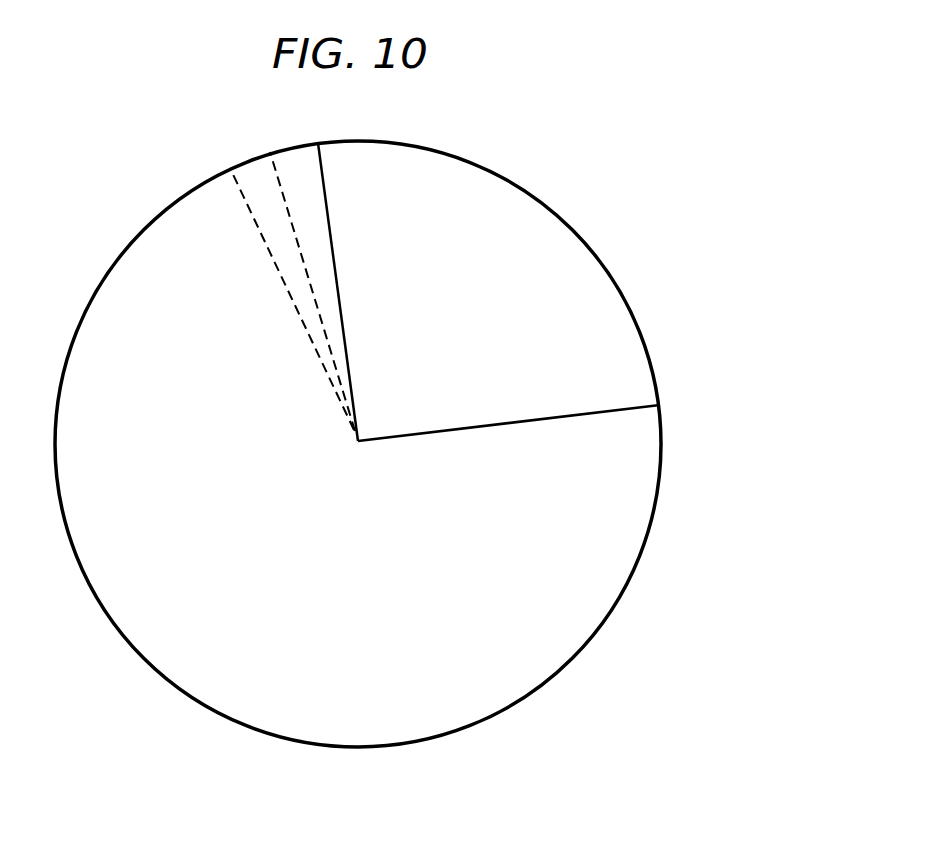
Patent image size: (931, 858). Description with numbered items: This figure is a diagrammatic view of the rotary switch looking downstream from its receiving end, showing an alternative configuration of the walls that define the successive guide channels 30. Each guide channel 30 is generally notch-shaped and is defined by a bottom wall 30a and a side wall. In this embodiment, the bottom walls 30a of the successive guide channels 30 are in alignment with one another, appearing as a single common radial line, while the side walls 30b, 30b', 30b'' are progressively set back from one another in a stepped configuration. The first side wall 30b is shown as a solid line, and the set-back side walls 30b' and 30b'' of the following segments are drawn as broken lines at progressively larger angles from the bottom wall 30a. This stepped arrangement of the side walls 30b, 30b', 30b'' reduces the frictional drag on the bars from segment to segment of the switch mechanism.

The guide channel 30 is at (532, 213).
The bottom wall 30a is at (604, 411).
The side wall 30b is at (367, 292).
The side wall 30b' is at (265, 262).
The side wall 30b'' is at (243, 285).